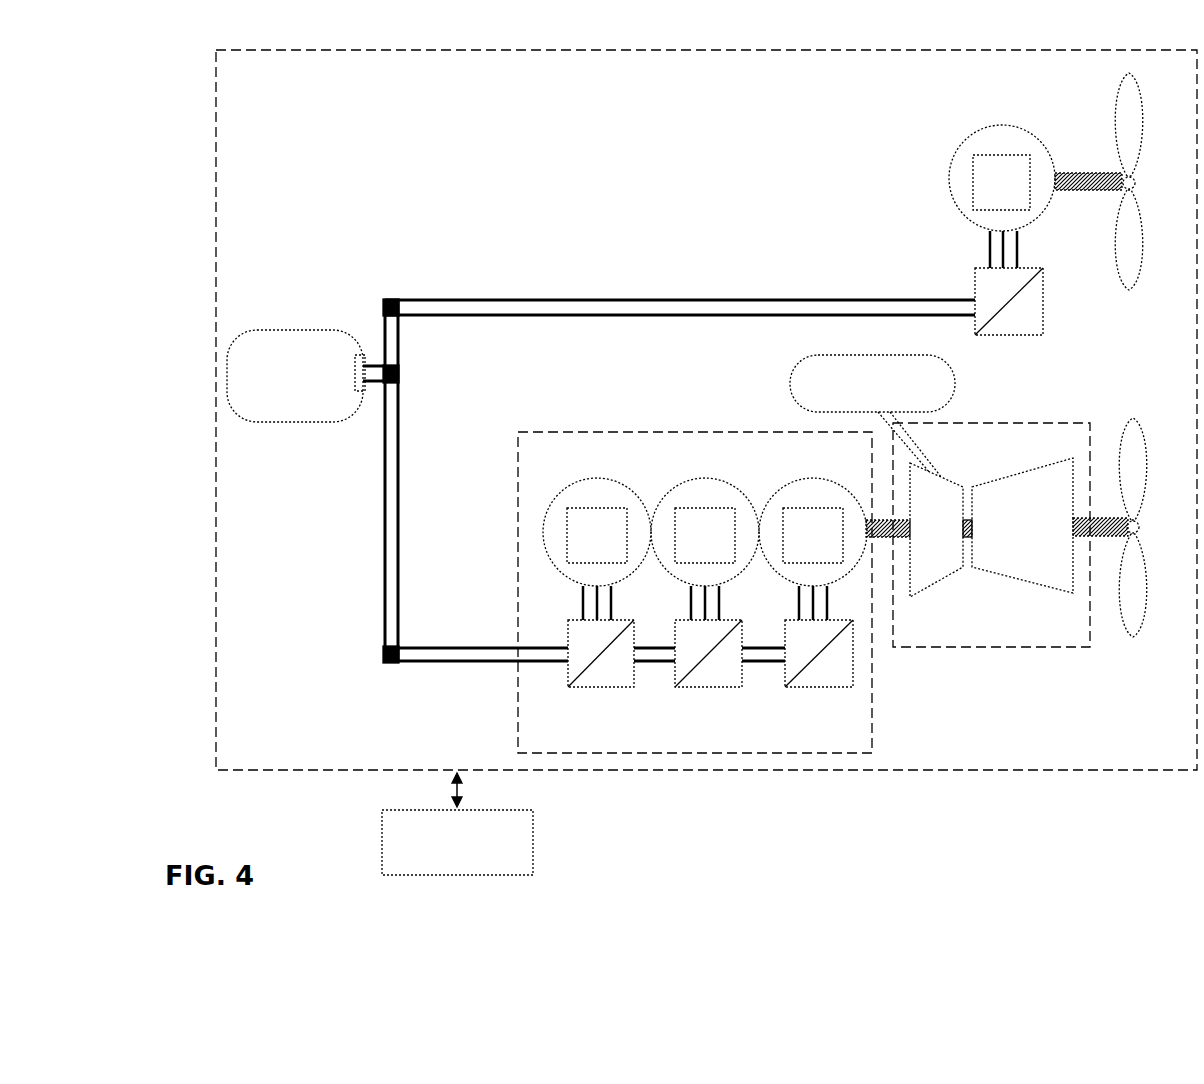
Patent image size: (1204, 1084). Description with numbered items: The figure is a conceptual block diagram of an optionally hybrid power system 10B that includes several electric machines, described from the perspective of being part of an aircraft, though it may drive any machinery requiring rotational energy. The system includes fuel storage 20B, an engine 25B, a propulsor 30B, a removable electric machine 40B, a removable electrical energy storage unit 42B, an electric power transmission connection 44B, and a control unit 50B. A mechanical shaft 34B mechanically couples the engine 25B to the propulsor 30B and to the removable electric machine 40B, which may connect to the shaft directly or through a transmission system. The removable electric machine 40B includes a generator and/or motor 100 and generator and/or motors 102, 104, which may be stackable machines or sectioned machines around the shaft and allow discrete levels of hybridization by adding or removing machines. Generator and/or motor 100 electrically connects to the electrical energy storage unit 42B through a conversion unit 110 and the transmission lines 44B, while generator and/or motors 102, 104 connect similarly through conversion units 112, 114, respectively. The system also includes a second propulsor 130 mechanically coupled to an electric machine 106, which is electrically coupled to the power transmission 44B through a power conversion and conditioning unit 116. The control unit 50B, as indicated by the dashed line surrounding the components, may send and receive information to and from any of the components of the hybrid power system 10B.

The optionally hybrid power system 10B is at (205, 86).
The fuel storage 20B is at (872, 416).
The engine 25B is at (975, 656).
The propulsor 30B is at (1137, 640).
The mechanical shaft 34B is at (1103, 517).
The removable electric machine 40B is at (622, 428).
The removable electrical energy storage unit 42B is at (296, 376).
The electric power transmission connection 44B is at (380, 578).
The control unit 50B is at (457, 824).
The generator and/or motor 100 is at (590, 478).
The generator and/or motor 102 is at (700, 478).
The generator and/or motor 104 is at (810, 476).
The electric machine 106 is at (996, 120).
The conversion unit 110 is at (613, 693).
The conversion unit 112 is at (703, 693).
The conversion unit 114 is at (807, 693).
The power conversion and conditioning unit 116 is at (973, 279).
The second propulsor 130 is at (1113, 284).